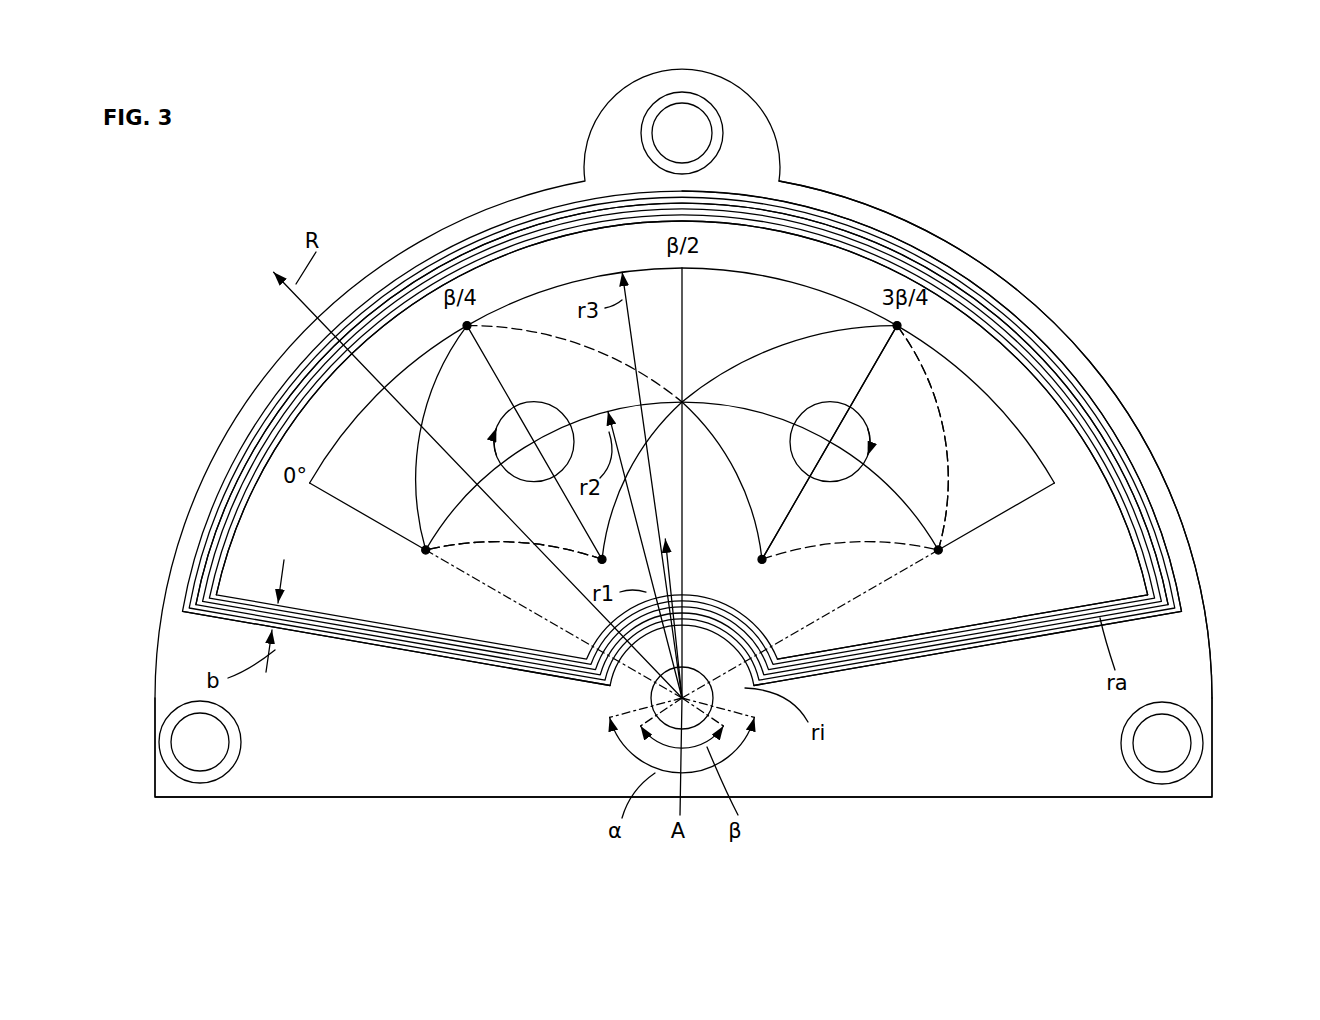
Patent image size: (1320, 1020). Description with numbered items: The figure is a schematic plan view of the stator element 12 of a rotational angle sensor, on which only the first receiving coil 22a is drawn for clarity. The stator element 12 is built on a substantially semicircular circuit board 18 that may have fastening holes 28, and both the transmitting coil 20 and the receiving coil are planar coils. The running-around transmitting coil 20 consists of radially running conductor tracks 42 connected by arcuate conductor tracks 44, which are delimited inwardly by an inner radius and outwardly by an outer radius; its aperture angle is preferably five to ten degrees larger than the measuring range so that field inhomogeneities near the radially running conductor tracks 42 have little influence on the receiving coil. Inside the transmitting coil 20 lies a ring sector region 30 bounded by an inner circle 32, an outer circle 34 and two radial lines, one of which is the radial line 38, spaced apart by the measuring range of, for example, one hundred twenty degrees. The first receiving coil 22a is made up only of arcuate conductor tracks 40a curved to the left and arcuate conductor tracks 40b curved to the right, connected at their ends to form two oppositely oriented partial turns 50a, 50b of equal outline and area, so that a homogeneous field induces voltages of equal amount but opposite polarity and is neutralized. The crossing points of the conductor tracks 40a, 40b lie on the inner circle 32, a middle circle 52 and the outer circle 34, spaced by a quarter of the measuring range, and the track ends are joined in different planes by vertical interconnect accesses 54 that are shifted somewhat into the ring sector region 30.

The stator element 12 is at (1226, 150).
The circuit board 18 is at (1076, 755).
The transmitting coil 20 is at (1042, 310).
The first receiving coil 22a is at (1068, 350).
The fastening holes 28 is at (682, 128).
The ring sector region 30 is at (517, 270).
The inner circle 32 is at (812, 580).
The outer circle 34 is at (835, 290).
The radial line 38 is at (1032, 597).
The arcuate conductor tracks curved to the left 40a is at (550, 335).
The arcuate conductor tracks curved to the right 40b is at (790, 325).
The radially running conductor tracks 42 is at (336, 642).
The arcuate conductor tracks of the transmitting coil 44 is at (905, 235).
The first partial turn 50a is at (921, 457).
The second partial turn 50b is at (490, 545).
The middle circle 52 is at (905, 590).
The vertical interconnect accesses 54 is at (408, 300).